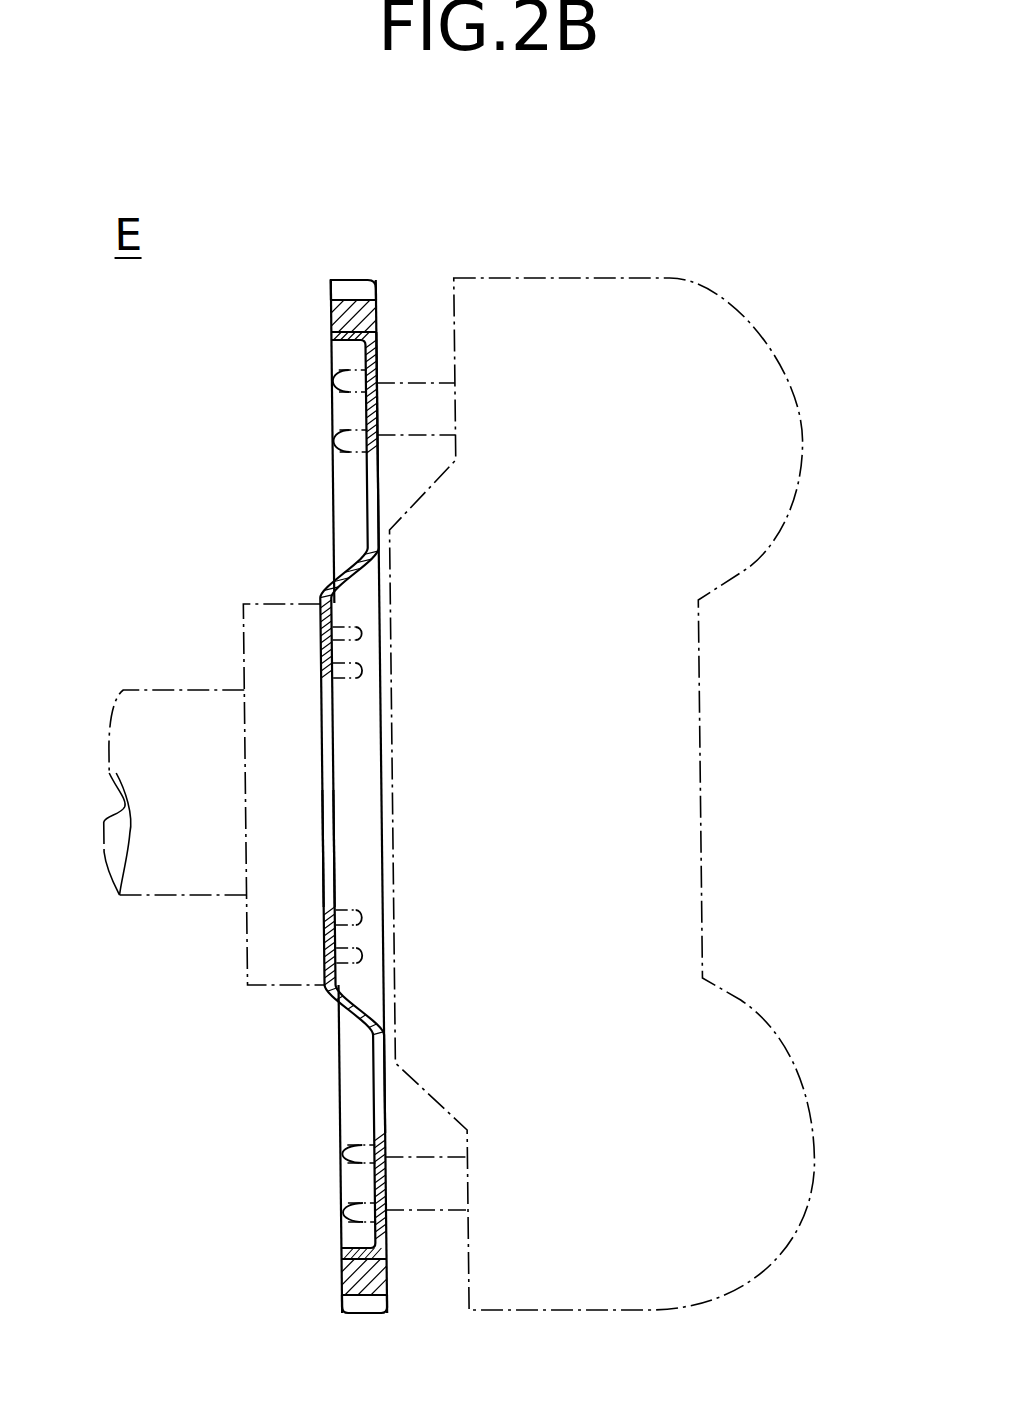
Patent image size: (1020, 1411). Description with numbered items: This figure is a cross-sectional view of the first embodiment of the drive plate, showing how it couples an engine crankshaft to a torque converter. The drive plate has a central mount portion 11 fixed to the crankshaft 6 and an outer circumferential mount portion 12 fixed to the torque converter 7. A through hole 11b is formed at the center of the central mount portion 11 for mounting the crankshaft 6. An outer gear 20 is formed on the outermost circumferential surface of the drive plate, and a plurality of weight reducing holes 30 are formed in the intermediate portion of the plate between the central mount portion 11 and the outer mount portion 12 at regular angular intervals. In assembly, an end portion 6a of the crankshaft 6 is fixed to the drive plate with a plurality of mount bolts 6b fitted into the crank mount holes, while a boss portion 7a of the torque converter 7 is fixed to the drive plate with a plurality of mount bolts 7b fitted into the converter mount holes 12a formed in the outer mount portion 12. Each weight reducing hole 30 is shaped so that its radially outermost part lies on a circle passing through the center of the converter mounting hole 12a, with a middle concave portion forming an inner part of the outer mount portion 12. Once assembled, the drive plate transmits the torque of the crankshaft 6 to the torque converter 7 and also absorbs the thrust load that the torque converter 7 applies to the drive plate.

The crankshaft 6 is at (163, 717).
The end portion of the crankshaft 6a is at (251, 983).
The mount bolts 6b is at (356, 650).
The torque converter 7 is at (777, 360).
The boss portion of the torque converter 7a is at (444, 394).
The mount bolts 7b is at (331, 412).
The central mount portion 11 is at (320, 873).
The through hole 11b is at (330, 785).
The outer mount portion 12 is at (376, 360).
The converter mounting hole 12a is at (373, 412).
The outer gear 20 is at (337, 290).
The weight reducing hole 30 is at (361, 522).